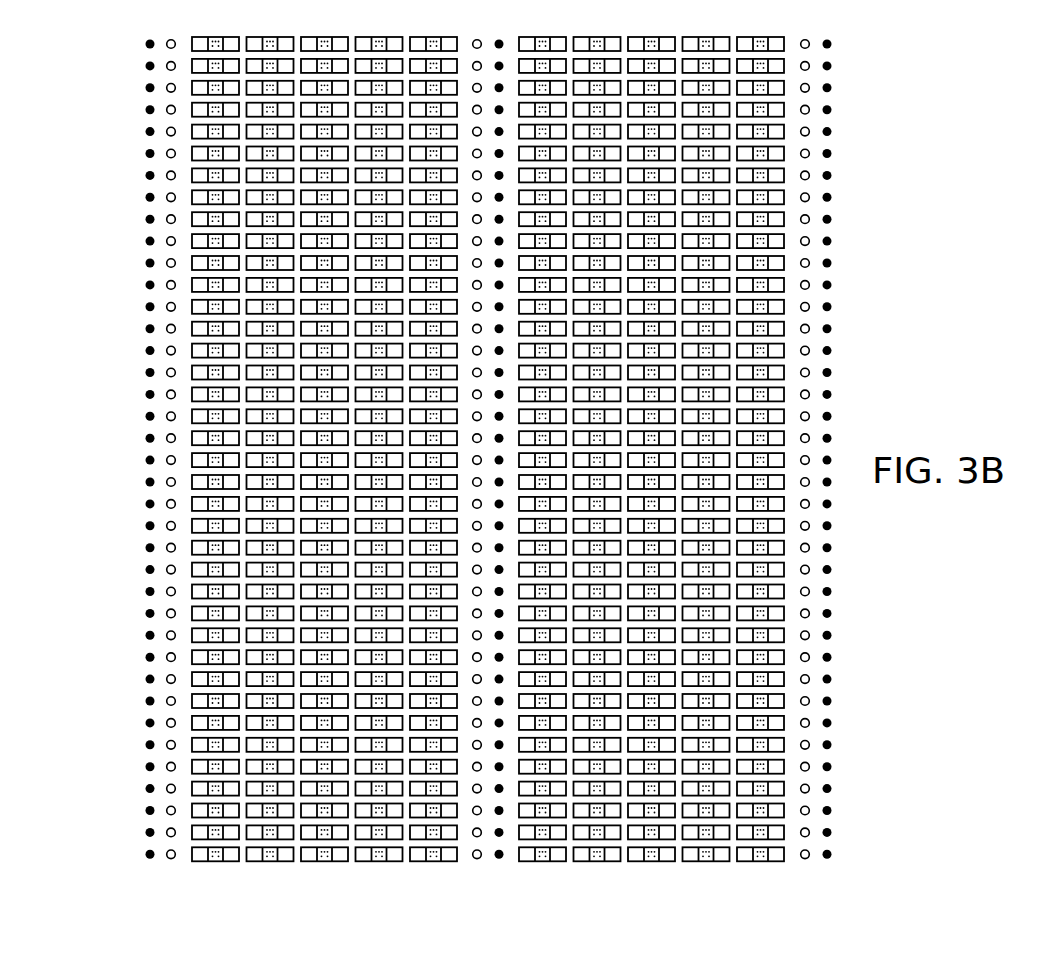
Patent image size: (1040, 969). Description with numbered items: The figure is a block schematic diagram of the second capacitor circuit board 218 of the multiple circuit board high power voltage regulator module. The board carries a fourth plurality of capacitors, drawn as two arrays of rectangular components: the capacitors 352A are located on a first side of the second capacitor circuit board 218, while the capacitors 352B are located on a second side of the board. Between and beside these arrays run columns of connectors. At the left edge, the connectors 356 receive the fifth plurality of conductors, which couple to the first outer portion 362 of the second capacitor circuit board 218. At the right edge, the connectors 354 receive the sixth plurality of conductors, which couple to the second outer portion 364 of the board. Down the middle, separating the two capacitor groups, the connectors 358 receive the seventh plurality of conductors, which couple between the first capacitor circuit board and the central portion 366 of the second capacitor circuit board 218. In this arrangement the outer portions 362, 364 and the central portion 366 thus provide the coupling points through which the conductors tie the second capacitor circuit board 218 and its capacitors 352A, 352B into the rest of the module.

The second capacitor circuit board 218 is at (472, 488).
The capacitors 352A is at (323, 863).
The capacitors 352B is at (652, 863).
The connectors 354 is at (833, 858).
The connectors 356 is at (143, 856).
The connectors 358 is at (500, 863).
The first outer portion 362 is at (156, 878).
The second outer portion 364 is at (820, 876).
The central portion 366 is at (475, 876).